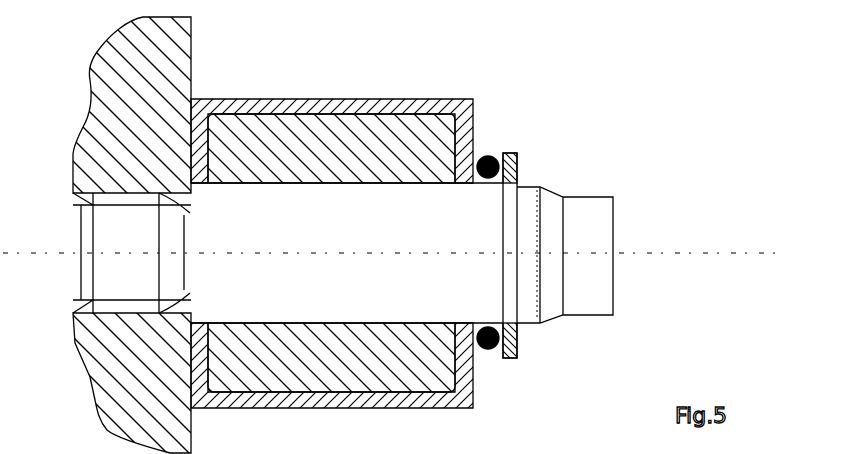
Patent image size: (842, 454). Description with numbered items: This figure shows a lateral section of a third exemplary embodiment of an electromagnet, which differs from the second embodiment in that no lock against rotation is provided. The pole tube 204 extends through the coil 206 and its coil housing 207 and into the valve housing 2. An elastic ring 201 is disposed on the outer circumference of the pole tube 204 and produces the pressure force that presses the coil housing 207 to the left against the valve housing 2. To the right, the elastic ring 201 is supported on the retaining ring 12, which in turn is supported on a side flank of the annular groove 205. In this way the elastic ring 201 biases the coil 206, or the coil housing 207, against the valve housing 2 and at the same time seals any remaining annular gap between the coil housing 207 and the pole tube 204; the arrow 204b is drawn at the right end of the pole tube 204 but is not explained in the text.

The valve housing 2 is at (134, 131).
The coil housing 207 is at (257, 110).
The coil 206 is at (337, 156).
The pole tube 204 is at (337, 221).
The elastic ring 201 is at (488, 137).
The annular groove 205 is at (510, 228).
The retaining ring 12 is at (510, 343).
The direction of movement 204b is at (660, 203).